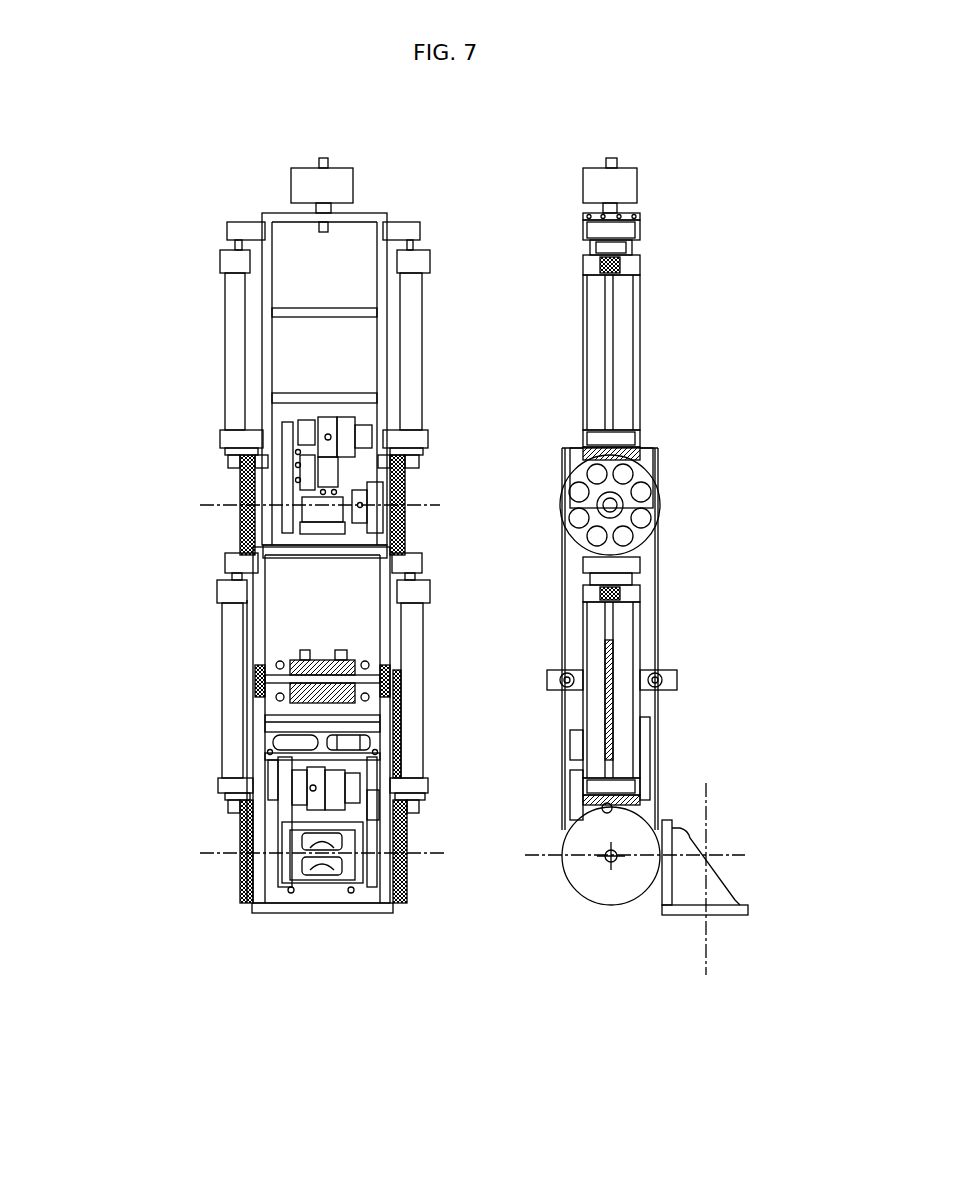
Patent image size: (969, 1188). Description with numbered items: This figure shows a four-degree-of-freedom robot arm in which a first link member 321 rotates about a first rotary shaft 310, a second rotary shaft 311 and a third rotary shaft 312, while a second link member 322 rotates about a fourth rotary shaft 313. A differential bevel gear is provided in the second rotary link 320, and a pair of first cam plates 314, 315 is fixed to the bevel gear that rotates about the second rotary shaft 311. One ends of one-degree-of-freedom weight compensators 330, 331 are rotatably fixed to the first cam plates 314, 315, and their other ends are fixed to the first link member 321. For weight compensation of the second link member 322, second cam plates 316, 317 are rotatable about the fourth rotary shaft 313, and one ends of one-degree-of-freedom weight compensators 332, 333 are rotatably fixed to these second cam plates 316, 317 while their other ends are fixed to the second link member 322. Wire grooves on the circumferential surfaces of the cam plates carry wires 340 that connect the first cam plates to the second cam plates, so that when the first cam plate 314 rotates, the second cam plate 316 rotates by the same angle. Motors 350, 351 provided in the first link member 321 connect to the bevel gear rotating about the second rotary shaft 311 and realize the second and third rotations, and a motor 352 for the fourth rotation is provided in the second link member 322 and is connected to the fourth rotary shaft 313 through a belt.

The first rotary shaft 310 is at (708, 806).
The second rotary shaft 311 is at (727, 853).
The third rotary shaft 312 is at (205, 856).
The fourth rotary shaft 313 is at (245, 505).
The first cam plate 314 is at (238, 902).
The first cam plate 315 is at (580, 885).
The second cam plate 316 is at (240, 513).
The second cam plate 317 is at (560, 500).
The second rotary link 320 is at (323, 882).
The first link member 321 is at (265, 660).
The second link member 322 is at (275, 300).
The one-degree-of-freedom weight compensator 330 is at (235, 740).
The one-degree-of-freedom weight compensator 331 is at (425, 712).
The one-degree-of-freedom weight compensator 332 is at (225, 330).
The one-degree-of-freedom weight compensator 333 is at (583, 340).
The wire 340 is at (657, 622).
The motor 350 is at (305, 788).
The motor 351 is at (275, 750).
The motor 352 is at (283, 432).